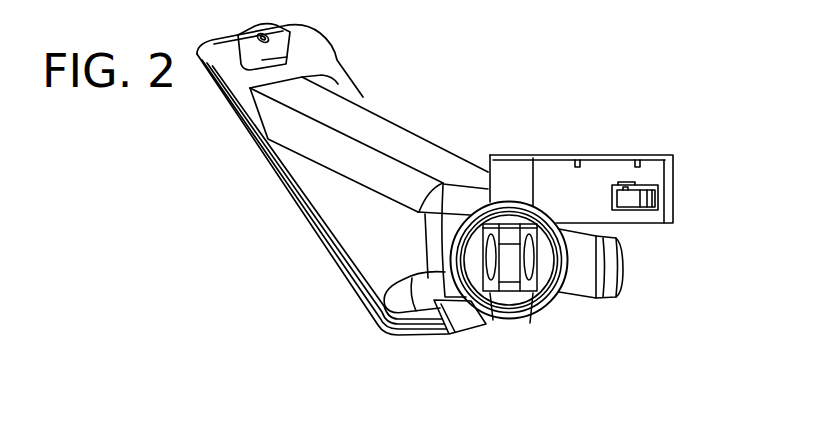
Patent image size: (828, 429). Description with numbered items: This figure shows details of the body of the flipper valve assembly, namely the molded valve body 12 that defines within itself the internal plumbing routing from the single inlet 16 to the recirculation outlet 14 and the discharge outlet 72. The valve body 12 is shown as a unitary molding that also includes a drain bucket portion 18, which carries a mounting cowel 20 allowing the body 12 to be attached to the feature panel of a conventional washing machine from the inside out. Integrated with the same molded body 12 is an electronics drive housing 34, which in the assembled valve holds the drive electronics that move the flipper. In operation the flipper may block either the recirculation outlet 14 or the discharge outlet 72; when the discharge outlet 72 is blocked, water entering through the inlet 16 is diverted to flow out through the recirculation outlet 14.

The valve body 12 is at (238, 277).
The recirculation outlet 14 is at (527, 316).
The inlet 16 is at (505, 312).
The drain bucket portion 18 is at (413, 144).
The mounting cowel 20 is at (317, 53).
The electronics drive housing 34 is at (652, 165).
The discharge outlet 72 is at (493, 320).